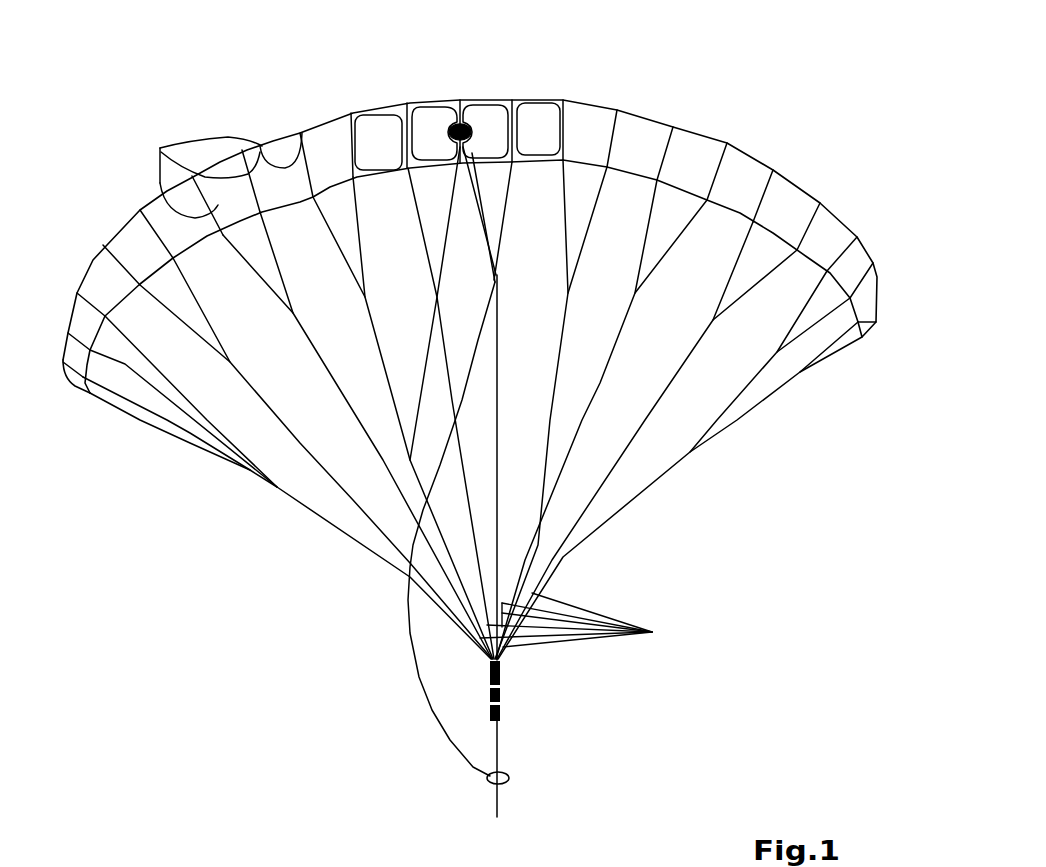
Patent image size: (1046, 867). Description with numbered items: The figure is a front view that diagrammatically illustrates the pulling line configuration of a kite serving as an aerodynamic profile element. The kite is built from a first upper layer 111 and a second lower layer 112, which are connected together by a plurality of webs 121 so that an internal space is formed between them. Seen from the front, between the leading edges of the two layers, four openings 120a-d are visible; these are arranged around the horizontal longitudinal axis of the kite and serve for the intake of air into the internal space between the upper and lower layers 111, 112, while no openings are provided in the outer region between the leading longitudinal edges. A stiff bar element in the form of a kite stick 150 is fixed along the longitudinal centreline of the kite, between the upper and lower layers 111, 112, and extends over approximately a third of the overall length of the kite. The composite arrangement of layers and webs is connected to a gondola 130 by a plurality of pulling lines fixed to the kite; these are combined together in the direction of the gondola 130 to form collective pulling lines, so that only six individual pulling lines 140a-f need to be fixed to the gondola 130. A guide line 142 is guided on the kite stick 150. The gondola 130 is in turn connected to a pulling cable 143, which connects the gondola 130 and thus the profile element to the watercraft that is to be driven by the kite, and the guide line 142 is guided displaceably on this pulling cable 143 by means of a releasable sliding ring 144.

The first upper layer 111 is at (487, 97).
The second lower layer 112 is at (600, 110).
The openings 120a-d is at (540, 117).
The webs 121 is at (217, 167).
The gondola 130 is at (500, 703).
The pulling lines 140a-f is at (612, 627).
The guide line 142 is at (417, 657).
The pulling cable 143 is at (497, 750).
The releasable sliding ring 144 is at (490, 783).
The kite stick 150 is at (462, 123).